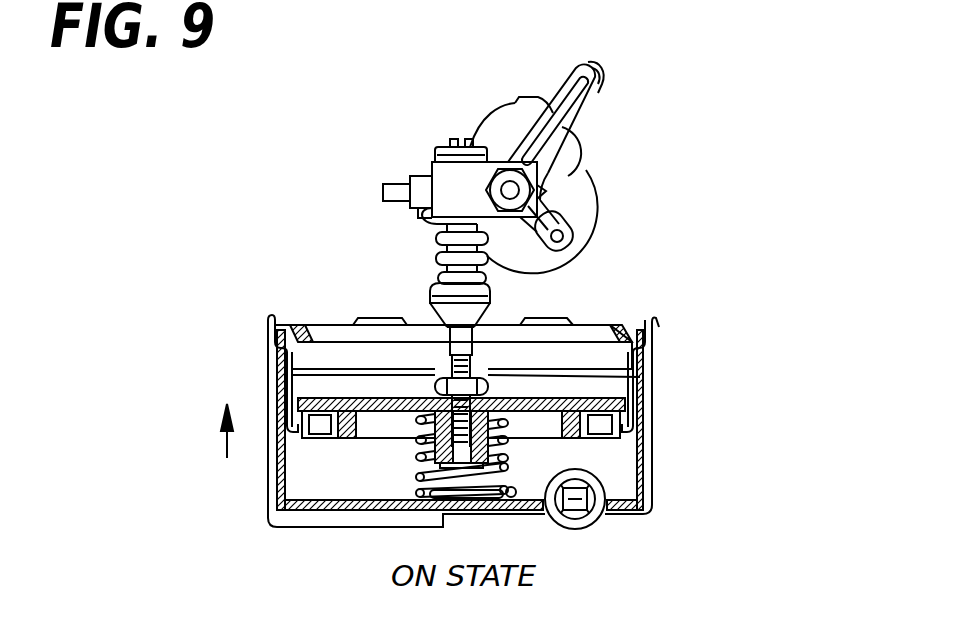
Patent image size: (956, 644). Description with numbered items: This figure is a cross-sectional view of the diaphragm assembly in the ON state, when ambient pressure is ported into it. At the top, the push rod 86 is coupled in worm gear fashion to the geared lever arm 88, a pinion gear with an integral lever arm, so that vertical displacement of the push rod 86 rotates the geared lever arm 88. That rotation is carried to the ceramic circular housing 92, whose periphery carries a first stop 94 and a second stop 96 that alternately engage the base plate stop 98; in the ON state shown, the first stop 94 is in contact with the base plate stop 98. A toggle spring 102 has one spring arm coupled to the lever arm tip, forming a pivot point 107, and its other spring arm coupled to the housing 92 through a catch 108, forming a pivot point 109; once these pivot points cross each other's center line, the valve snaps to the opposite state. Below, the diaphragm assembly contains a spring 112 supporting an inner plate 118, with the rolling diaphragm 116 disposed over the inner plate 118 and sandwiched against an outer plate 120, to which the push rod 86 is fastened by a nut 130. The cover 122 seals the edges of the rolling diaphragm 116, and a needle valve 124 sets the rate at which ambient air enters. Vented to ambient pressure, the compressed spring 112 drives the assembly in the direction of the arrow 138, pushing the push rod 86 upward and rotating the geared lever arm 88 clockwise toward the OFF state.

The push rod 86 is at (419, 262).
The geared lever arm 88 is at (602, 110).
The ceramic circular housing 92 is at (480, 130).
The first stop 94 is at (423, 220).
The second stop 96 is at (517, 107).
The base plate stop 98 is at (383, 187).
The toggle spring 102 is at (601, 159).
The pivot point 107 is at (598, 72).
The catch 108 is at (548, 220).
The pivot point 109 is at (562, 245).
The spring 112 is at (396, 465).
The rolling diaphragm 116 is at (655, 398).
The inner plate 118 is at (547, 439).
The outer plate 120 is at (640, 377).
The cover 122 is at (632, 323).
The needle valve 124 is at (610, 489).
The nut 130 is at (435, 386).
The arrow 138 is at (227, 447).